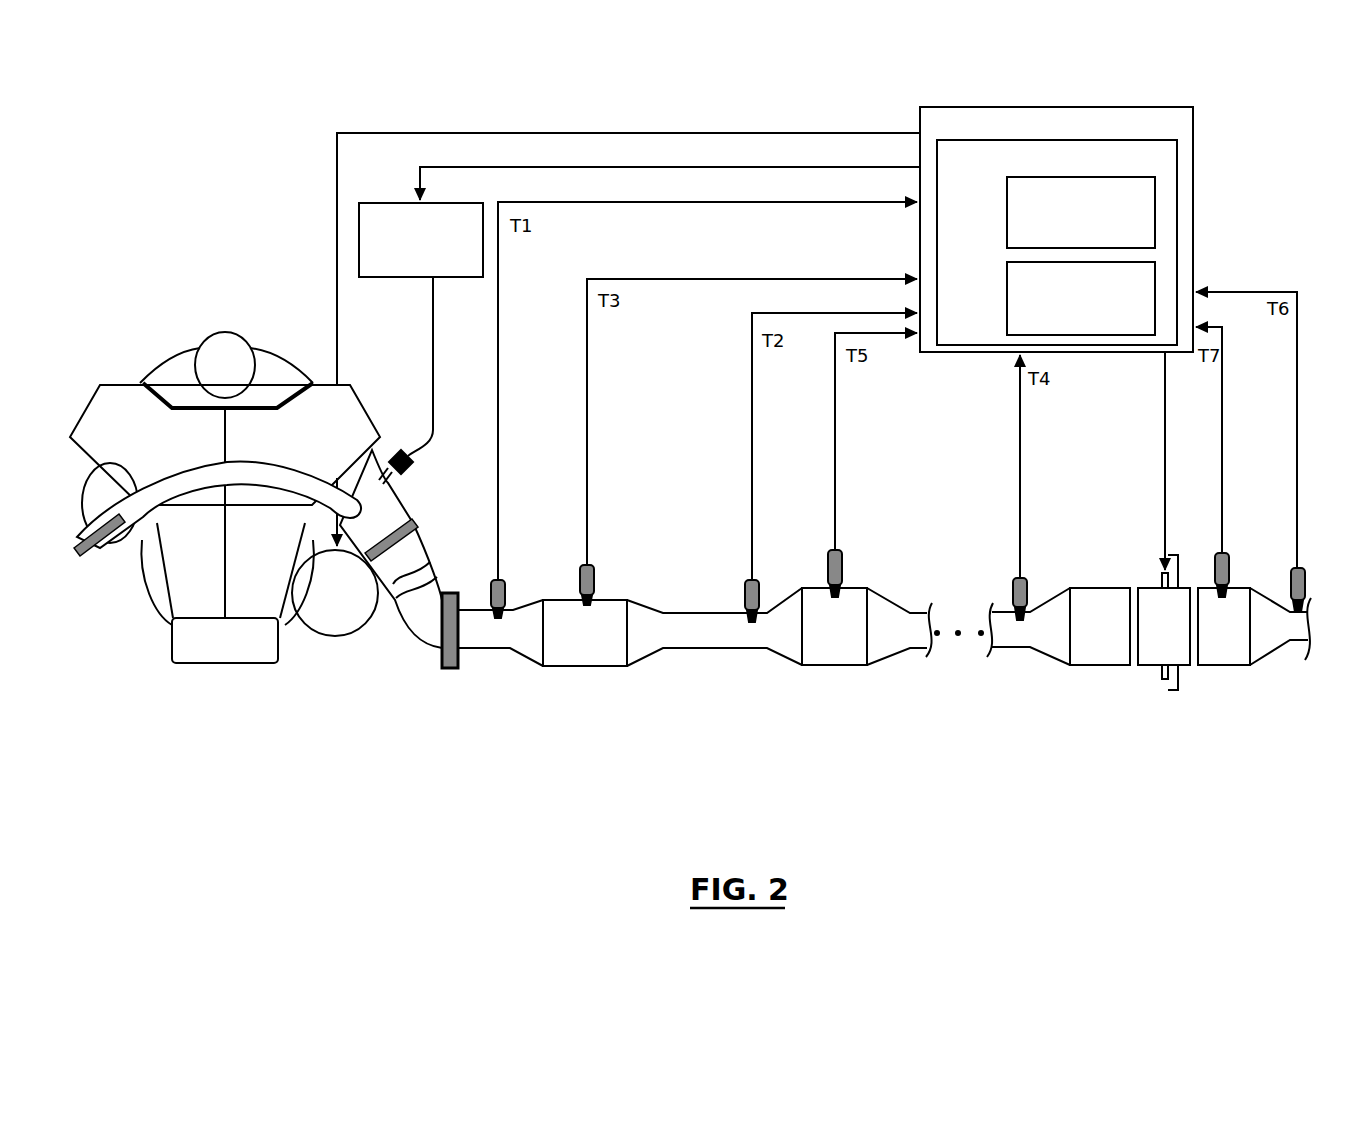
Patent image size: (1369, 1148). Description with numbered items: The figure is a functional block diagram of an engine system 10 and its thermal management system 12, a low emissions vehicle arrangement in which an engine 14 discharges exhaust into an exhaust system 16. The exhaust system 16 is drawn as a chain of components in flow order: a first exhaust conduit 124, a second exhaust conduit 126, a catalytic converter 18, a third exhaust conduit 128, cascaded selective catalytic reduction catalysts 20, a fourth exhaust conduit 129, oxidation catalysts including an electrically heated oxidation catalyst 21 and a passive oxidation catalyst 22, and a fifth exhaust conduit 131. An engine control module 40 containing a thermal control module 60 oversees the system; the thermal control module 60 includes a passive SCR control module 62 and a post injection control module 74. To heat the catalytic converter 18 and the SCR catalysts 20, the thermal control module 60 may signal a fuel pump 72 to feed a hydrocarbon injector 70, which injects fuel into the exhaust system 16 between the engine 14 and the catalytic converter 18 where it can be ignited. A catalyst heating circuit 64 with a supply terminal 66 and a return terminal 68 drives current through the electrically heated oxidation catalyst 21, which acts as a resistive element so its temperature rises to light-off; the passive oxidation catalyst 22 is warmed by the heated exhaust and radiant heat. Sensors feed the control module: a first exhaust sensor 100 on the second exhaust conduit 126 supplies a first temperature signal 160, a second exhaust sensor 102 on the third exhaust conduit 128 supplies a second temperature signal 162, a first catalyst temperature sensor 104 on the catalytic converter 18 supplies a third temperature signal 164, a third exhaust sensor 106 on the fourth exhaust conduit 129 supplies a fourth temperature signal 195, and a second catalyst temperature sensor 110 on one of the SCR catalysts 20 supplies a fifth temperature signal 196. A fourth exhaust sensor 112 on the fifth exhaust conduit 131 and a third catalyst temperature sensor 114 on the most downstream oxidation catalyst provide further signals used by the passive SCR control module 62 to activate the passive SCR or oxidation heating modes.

The engine system 10 is at (158, 190).
The thermal management system 12 is at (1270, 194).
The engine 14 is at (118, 380).
The exhaust system 16 is at (498, 742).
The catalytic converter 18 is at (598, 668).
The cascaded selective catalytic reduction catalysts 20 is at (822, 667).
The electrically heated oxidation catalyst 21 is at (1157, 667).
The passive oxidation catalyst 22 is at (1224, 667).
The engine control module 40 is at (1193, 140).
The thermal control module 60 is at (1177, 255).
The passive SCR control module 62 is at (1007, 300).
The catalyst heating circuit 64 is at (1140, 780).
The supply terminal 66 is at (1163, 568).
The return terminal 68 is at (1160, 682).
The hydrocarbon injector 70 is at (403, 448).
The fuel pump 72 is at (388, 203).
The post injection control module 74 is at (1007, 222).
The first exhaust flow, pressure and/or temperature sensor 100 is at (492, 575).
The second exhaust flow, pressure and/or temperature sensor 102 is at (748, 578).
The first catalyst temperature sensor 104 is at (590, 562).
The third exhaust flow, pressure and/or temperature sensor 106 is at (1025, 575).
The second catalyst temperature sensor 110 is at (830, 548).
The fourth exhaust flow, pressure and/or temperature sensor 112 is at (1302, 566).
The third catalyst temperature sensor 114 is at (1225, 552).
The first exhaust conduit 124 is at (415, 645).
The second exhaust conduit 126 is at (511, 650).
The third exhaust conduit 128 is at (692, 650).
The fourth exhaust conduit 129 is at (1013, 650).
The fifth exhaust conduit 131 is at (1298, 642).
The temperature signal T1 160 is at (498, 343).
The temperature signal T2 162 is at (735, 356).
The temperature signal T3 164 is at (722, 279).
The temperature signal T4 195 is at (1020, 440).
The temperature signal T5 196 is at (835, 425).